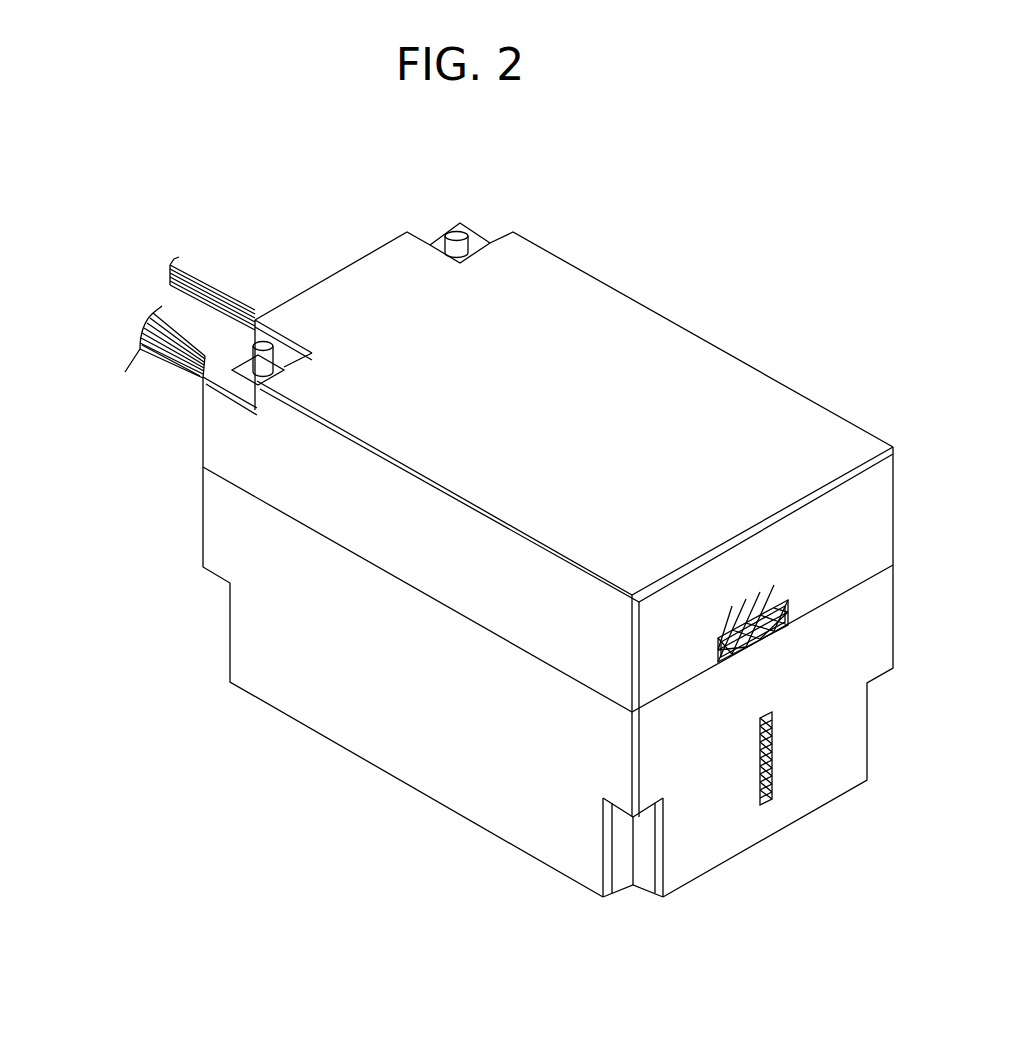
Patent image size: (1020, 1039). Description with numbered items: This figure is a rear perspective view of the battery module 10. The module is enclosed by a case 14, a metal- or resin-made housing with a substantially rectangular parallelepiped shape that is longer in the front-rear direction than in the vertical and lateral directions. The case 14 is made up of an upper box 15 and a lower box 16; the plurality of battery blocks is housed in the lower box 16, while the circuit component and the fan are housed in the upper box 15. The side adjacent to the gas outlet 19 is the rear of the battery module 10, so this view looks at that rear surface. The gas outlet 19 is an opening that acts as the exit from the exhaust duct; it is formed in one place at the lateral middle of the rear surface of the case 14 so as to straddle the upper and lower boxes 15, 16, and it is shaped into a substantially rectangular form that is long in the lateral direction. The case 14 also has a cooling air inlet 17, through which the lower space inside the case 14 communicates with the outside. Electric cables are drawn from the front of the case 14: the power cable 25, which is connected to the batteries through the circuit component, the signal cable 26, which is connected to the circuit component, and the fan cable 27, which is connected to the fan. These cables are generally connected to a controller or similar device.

The battery module 10 is at (755, 222).
The case 14 is at (99, 493).
The upper box 15 is at (213, 440).
The lower box 16 is at (217, 547).
The cooling air inlet 17 is at (773, 750).
The gas outlet 19 is at (718, 666).
The power cable 25 is at (162, 290).
The signal cable 26 is at (158, 372).
The fan cable 27 is at (208, 282).